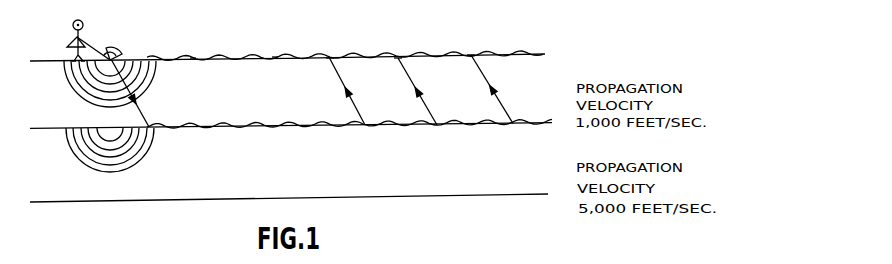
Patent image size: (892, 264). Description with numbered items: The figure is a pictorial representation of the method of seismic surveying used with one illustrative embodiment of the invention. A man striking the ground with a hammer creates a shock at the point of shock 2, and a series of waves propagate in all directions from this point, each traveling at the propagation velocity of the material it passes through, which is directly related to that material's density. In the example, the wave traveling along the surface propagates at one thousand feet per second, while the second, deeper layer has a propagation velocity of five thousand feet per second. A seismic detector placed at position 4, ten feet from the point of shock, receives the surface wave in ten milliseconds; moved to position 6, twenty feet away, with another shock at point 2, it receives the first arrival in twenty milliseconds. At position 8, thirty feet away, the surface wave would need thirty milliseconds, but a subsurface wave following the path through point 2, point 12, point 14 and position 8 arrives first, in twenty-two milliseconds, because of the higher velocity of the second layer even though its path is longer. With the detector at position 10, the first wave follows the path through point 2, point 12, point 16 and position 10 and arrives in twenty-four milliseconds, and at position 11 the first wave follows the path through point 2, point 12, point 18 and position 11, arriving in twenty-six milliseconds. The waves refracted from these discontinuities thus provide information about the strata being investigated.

The point of shock 2 is at (119, 55).
The detector position 4 is at (193, 57).
The detector position 6 is at (275, 57).
The detector position 8 is at (331, 57).
The detector position 10 is at (400, 58).
The detector position 11 is at (472, 54).
The subsurface path point 12 is at (150, 127).
The subsurface path point 14 is at (366, 125).
The subsurface path point 16 is at (438, 125).
The subsurface path point 18 is at (514, 123).